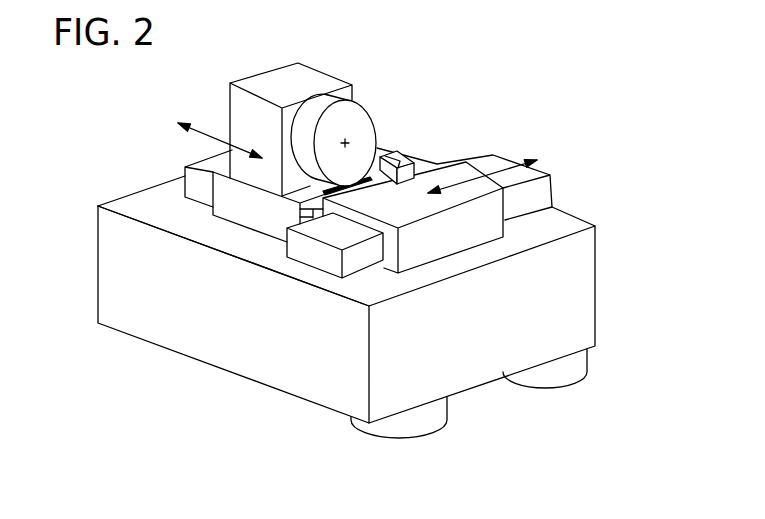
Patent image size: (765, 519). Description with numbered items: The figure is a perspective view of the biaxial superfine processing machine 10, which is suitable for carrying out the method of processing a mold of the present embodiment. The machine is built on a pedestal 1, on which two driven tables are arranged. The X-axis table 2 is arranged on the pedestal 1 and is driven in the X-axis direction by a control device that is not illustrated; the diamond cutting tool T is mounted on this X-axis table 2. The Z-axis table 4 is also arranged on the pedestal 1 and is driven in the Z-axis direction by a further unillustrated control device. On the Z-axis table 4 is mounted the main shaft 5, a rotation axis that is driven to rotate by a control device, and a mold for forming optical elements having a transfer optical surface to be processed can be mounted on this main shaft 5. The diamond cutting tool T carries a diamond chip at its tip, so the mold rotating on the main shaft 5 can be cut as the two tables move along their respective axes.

The pedestal 1 is at (205, 350).
The X-axis table 2 is at (506, 196).
The Z-axis table 4 is at (225, 212).
The main shaft 5 is at (367, 118).
The biaxial superfine processing machine 10 is at (540, 98).
The diamond cutting tool T is at (402, 155).